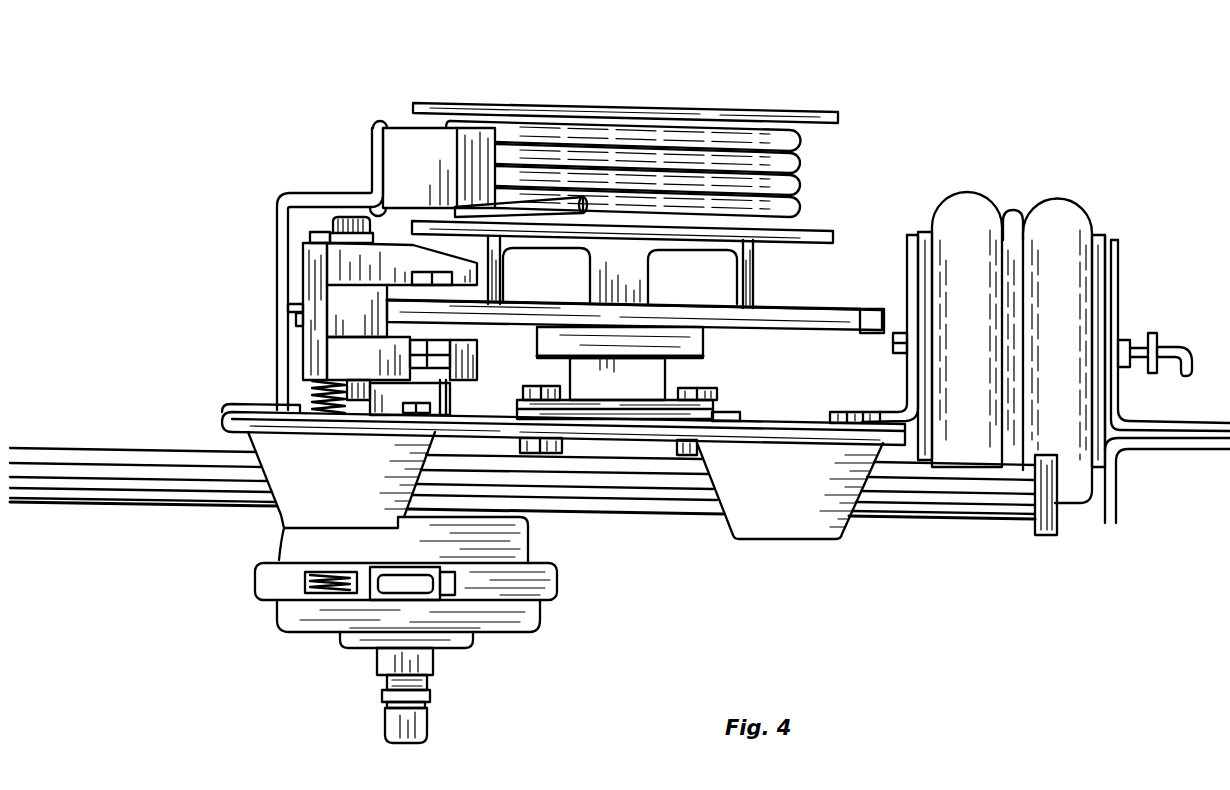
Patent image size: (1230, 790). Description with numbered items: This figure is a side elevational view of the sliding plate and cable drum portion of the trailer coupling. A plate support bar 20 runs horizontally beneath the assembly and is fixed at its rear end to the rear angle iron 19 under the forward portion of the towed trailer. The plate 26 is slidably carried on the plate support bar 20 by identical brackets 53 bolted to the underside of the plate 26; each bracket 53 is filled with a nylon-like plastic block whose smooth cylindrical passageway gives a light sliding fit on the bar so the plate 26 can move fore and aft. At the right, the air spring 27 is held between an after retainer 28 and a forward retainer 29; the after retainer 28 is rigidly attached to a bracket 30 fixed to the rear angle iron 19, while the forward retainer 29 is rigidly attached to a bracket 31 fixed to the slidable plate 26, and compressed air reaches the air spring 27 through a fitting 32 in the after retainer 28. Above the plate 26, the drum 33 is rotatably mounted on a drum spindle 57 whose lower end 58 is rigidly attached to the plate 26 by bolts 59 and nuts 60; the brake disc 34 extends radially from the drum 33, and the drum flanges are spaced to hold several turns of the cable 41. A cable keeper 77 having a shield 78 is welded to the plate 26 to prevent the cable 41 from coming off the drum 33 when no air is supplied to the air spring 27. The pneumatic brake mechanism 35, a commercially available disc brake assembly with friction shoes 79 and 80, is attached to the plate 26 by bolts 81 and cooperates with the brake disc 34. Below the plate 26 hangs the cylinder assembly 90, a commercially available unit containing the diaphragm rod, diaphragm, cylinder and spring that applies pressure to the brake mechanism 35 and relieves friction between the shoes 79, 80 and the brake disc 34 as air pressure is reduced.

The rear angle iron 19 is at (1133, 440).
The plate support bar 20 is at (152, 457).
The plate 26 is at (224, 417).
The air spring 27 is at (965, 198).
The after retainer 28 is at (1104, 232).
The forward retainer 29 is at (925, 232).
The bracket 30 is at (1119, 252).
The bracket 31 is at (908, 250).
The fitting 32 is at (1186, 352).
The drum 33 is at (692, 110).
The brake disc 34 is at (846, 308).
The pneumatic brake mechanism 35 is at (360, 312).
The cable 41 is at (793, 158).
The bracket 53 is at (290, 500).
The drum spindle 57 is at (650, 394).
The lower end 58 is at (520, 410).
The bolt 59 is at (546, 384).
The nut 60 is at (563, 447).
The cable keeper 77 is at (273, 197).
The shield 78 is at (405, 150).
The friction shoe 79 is at (437, 273).
The friction shoe 80 is at (455, 352).
The bolt 81 is at (424, 404).
The cylinder assembly 90 is at (566, 587).